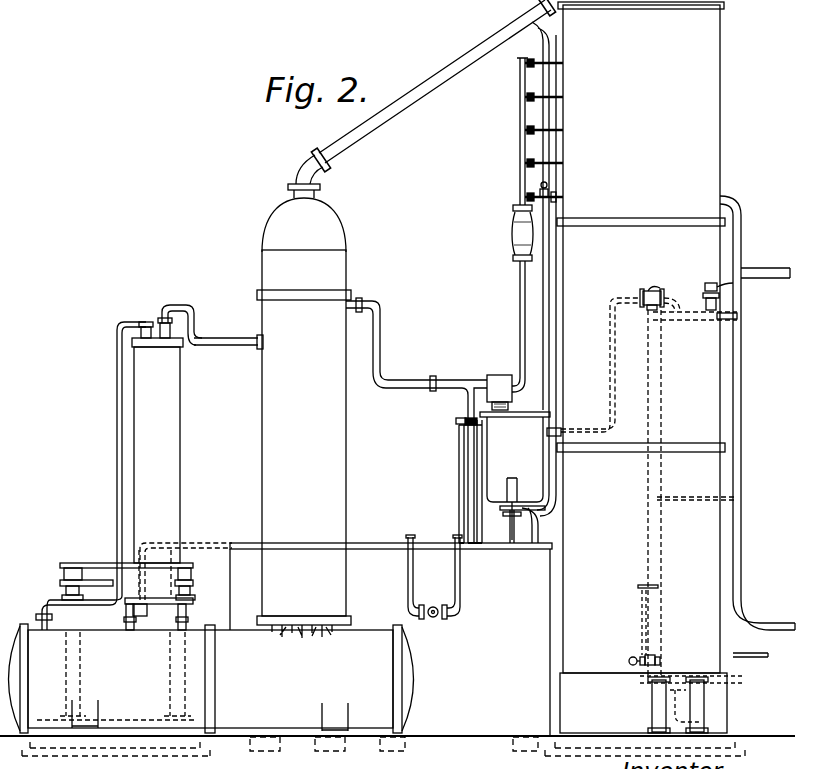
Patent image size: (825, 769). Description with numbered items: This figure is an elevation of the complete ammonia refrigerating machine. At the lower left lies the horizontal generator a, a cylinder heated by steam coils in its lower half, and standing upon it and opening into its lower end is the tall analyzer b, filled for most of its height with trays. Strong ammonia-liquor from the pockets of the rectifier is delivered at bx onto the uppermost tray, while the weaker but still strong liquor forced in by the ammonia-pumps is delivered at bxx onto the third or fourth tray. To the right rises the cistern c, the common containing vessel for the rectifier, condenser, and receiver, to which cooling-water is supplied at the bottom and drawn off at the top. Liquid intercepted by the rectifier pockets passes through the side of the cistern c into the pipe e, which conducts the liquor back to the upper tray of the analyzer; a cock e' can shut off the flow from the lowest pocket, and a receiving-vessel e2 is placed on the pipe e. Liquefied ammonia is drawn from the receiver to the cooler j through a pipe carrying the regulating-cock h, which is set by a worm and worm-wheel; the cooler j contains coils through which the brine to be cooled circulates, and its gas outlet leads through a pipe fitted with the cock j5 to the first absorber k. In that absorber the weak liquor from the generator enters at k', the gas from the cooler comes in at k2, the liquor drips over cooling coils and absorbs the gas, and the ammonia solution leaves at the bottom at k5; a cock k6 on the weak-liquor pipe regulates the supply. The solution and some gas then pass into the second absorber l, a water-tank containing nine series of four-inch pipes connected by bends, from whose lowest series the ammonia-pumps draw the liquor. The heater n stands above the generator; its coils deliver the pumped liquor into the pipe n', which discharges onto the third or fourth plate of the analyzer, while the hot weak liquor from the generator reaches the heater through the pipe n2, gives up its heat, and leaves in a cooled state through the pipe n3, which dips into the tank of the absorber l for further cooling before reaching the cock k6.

The generator a is at (211, 678).
The analyzer b is at (406, 319).
The delivery point of strong ammonia-liquor bx is at (416, 406).
The delivery point of pump liquor bxx is at (258, 339).
The cistern c is at (651, 367).
The pipe e is at (533, 269).
The cock e' is at (562, 187).
The receiving-vessel e2 is at (513, 237).
The regulating-cock h is at (639, 659).
The cooler j is at (727, 532).
The cock j5 is at (688, 469).
The first absorber k is at (503, 477).
The weak-liquor inlet k' is at (499, 410).
The gas inlet k2 is at (593, 368).
The solution outlet k5 is at (530, 522).
The cock k6 is at (434, 577).
The second absorber l is at (391, 639).
The auxiliary vessel n is at (127, 474).
The pipe n' is at (183, 319).
The pipe n2 is at (94, 432).
The pipe n3 is at (186, 558).